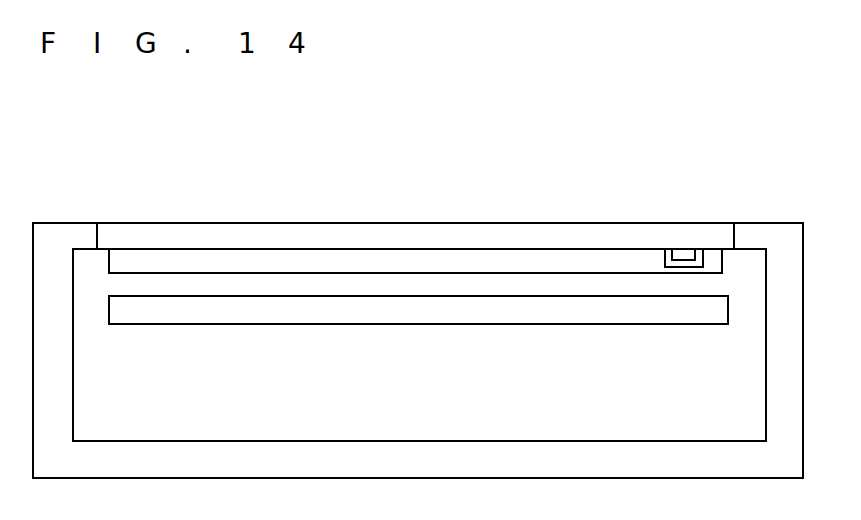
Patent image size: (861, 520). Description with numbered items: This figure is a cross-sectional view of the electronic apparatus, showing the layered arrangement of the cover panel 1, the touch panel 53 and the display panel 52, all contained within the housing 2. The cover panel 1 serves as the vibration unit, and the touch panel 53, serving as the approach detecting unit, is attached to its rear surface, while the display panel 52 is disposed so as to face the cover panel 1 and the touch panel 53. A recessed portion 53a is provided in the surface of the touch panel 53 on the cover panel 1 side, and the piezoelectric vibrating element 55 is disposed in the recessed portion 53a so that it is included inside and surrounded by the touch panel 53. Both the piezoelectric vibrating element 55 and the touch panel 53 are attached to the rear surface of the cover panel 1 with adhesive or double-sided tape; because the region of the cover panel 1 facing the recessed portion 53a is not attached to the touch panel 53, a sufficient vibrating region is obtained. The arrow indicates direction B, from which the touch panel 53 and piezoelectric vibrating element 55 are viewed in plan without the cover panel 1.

The cover panel 1 is at (424, 240).
The housing 2 is at (51, 240).
The display panel 52 is at (215, 305).
The touch panel 53 is at (540, 266).
The recessed portion 53a is at (665, 250).
The piezoelectric vibrating element 55 is at (691, 258).
The direction B is at (686, 247).